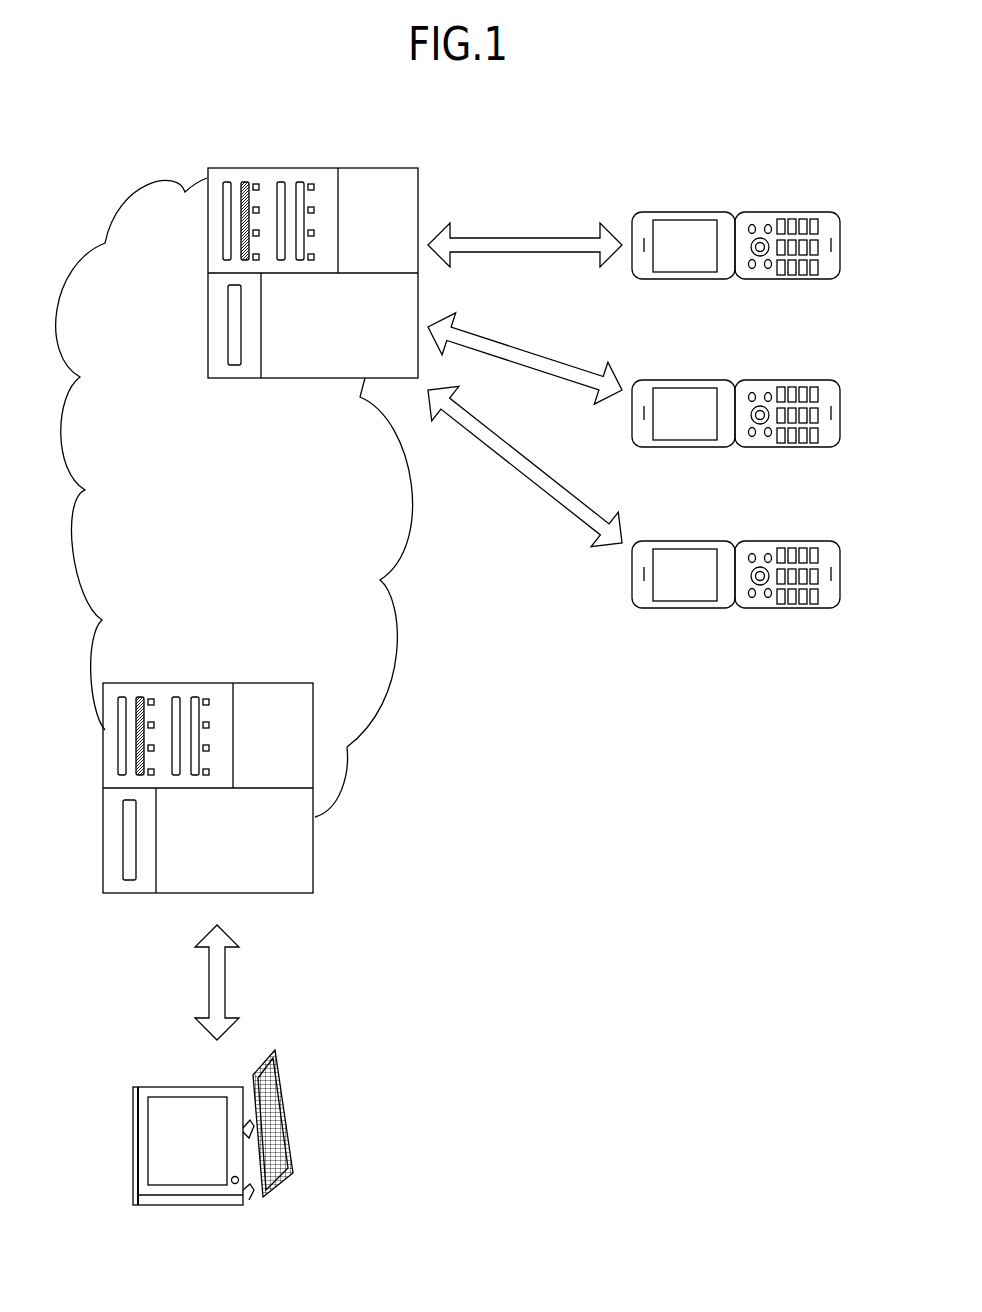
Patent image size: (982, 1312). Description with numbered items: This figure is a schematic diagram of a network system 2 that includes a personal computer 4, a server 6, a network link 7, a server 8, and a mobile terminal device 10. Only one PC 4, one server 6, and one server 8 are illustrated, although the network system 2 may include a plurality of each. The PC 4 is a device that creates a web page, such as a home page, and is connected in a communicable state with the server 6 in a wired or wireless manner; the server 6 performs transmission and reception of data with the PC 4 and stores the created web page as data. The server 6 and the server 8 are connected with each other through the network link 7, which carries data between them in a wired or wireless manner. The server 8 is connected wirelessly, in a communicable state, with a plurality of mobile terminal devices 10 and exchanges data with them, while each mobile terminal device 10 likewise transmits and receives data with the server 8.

The network system 2 is at (92, 176).
The personal computer 4 is at (134, 1108).
The server 6 is at (103, 828).
The network link 7 is at (63, 428).
The server 8 is at (207, 246).
The mobile terminal device 10 is at (683, 212).